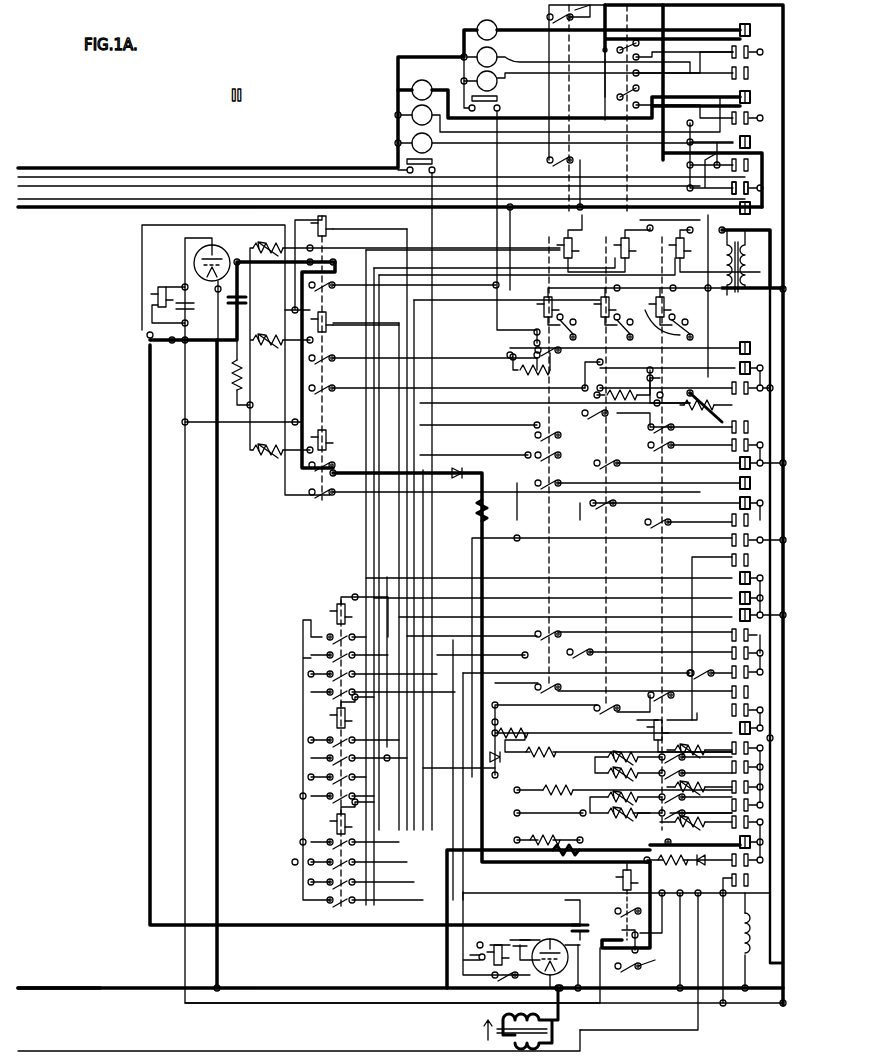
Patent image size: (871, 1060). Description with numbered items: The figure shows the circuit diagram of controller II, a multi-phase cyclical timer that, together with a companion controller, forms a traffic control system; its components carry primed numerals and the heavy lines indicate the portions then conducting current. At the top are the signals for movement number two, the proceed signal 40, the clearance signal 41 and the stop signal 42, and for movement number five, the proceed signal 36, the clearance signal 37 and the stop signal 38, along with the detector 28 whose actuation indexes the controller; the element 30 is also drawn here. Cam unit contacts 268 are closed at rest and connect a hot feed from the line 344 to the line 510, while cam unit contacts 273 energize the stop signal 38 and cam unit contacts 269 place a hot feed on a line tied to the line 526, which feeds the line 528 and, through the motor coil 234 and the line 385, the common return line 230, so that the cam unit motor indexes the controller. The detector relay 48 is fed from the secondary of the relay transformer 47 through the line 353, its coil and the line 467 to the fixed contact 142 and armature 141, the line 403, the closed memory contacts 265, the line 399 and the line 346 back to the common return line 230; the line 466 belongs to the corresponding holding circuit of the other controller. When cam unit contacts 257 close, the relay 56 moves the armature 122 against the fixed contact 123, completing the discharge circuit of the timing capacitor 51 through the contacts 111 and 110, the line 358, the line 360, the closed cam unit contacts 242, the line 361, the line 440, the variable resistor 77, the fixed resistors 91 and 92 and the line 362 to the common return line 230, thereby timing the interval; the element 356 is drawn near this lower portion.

The line 526 is at (40, 186).
The line 510 is at (102, 209).
The stop signal 42 is at (491, 28).
The clearance signal 41 is at (496, 52).
The proceed signal 40 is at (498, 83).
The stop signal 38 is at (426, 84).
The clearance signal 37 is at (390, 108).
The proceed signal 36 is at (434, 146).
The resistor 30 is at (500, 104).
The detector 28 is at (435, 170).
The cam unit contacts 273 is at (742, 93).
The cam unit contacts 269 is at (732, 190).
The cam unit contacts 268 is at (748, 212).
The line 344 is at (533, 209).
The line 466 is at (690, 228).
The line 353 is at (708, 286).
The line 467 is at (612, 306).
The detector relay 48 is at (675, 310).
The relay transformer 47 is at (726, 292).
The line 399 is at (770, 365).
The line 403 is at (732, 348).
The fixed contact 142 is at (660, 380).
The armature 141 is at (686, 415).
The memory contacts 265 is at (746, 392).
The line 346 is at (722, 498).
The cam unit contacts 257 is at (735, 556).
The relay 56 is at (648, 740).
The variable resistor 77 is at (583, 816).
The line 440 is at (700, 792).
The fixed contact 123 is at (712, 812).
The cam unit contacts 242 is at (738, 842).
The line 362 is at (455, 840).
The fixed resistor 91 is at (548, 845).
The fixed resistor 92 is at (566, 852).
The armature 122 is at (655, 866).
The timing capacitor 51 is at (585, 922).
The line 361 is at (716, 900).
The contacts 111 is at (642, 968).
The transformer 356 is at (560, 1012).
The contacts 110 is at (640, 980).
The line 358 is at (665, 1003).
The motor coil 234 is at (745, 990).
The line 360 is at (780, 1005).
The line 385 is at (748, 958).
The common return line 230 is at (38, 988).
The line 528 is at (38, 1051).